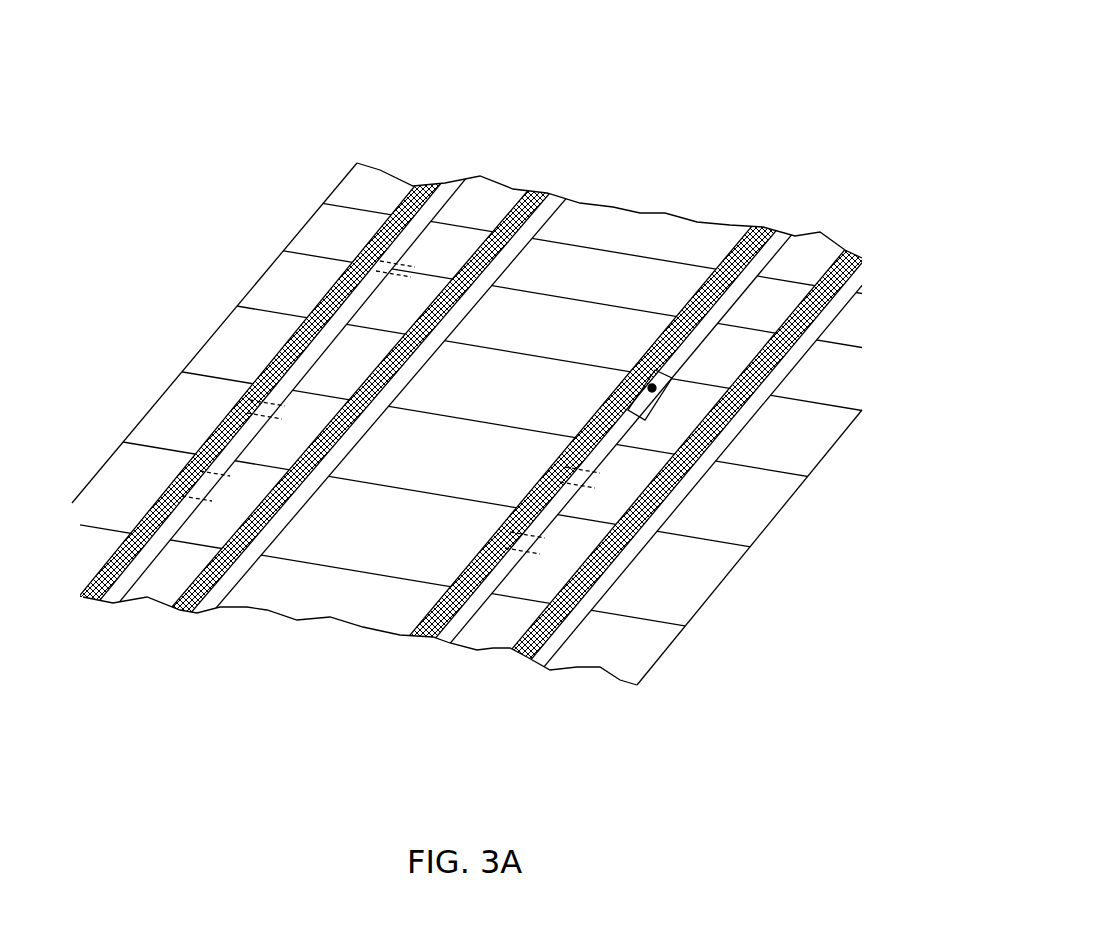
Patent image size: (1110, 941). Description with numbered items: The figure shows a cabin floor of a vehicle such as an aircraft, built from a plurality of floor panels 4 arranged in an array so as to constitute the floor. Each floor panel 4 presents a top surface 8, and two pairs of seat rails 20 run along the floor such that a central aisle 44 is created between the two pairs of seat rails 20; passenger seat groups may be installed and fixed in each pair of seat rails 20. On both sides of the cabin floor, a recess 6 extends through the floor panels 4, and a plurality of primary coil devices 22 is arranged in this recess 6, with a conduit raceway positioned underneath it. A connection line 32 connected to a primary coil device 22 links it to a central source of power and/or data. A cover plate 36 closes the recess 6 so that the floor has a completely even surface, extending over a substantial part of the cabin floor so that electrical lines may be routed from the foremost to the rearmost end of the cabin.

The central aisle 44 is at (636, 133).
The floor panel 4 is at (483, 200).
The first recess 6 is at (660, 385).
The top surface 8 is at (462, 329).
The seat rails 20 is at (118, 545).
The primary coil devices 22 is at (405, 262).
The connection line 32 is at (640, 370).
The cover plate 36 is at (318, 350).